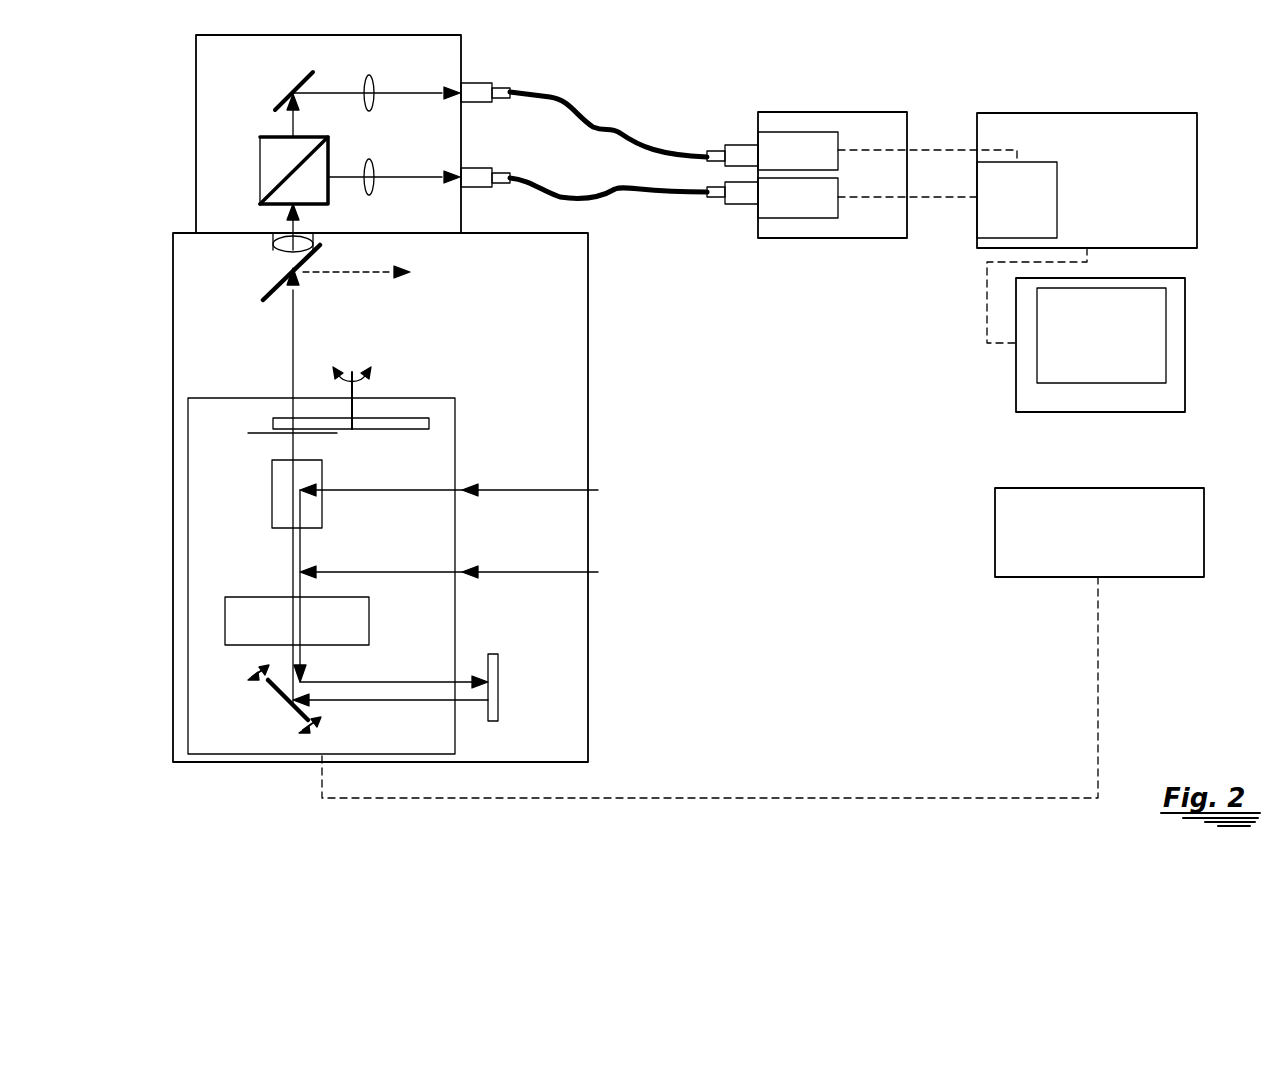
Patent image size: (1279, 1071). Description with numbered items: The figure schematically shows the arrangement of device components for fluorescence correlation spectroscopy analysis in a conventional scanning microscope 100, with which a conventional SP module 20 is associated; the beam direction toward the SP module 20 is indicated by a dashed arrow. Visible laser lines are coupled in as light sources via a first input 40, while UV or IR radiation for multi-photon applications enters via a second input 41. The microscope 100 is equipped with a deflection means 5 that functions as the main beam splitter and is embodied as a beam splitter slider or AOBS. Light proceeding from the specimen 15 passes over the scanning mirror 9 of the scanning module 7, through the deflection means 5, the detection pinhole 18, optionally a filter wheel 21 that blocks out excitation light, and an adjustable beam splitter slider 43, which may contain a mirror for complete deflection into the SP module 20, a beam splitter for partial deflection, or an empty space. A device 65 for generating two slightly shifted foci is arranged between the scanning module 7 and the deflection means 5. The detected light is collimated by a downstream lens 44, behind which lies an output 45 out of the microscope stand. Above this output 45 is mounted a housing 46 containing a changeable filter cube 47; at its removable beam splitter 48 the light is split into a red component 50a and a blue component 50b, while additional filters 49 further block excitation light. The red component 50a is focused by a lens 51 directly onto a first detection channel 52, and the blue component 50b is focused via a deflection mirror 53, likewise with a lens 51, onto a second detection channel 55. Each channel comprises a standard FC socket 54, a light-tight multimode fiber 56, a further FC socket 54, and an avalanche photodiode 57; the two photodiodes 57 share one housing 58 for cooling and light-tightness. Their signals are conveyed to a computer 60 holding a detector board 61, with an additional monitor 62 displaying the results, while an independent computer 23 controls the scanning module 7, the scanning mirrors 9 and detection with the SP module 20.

The deflection means 5 is at (270, 510).
The scanning module 7 is at (238, 686).
The scanning mirror 9 is at (283, 697).
The specimen 15 is at (500, 673).
The detection pinhole 18 is at (267, 435).
The SP module 20 is at (378, 275).
The filter wheel 21 is at (400, 417).
The computer 23 is at (1110, 549).
The first input 40 is at (567, 490).
The second input 41 is at (567, 572).
The adjustable beam splitter slider 43 is at (270, 290).
The lens 44 is at (313, 240).
The output 45 is at (282, 232).
The housing 46 is at (196, 65).
The filter cube 47 is at (258, 170).
The beam splitter 48 is at (292, 167).
The additional filters 49 is at (330, 153).
The red component 50a is at (442, 173).
The blue component 50b is at (437, 87).
The lens 51 is at (368, 74).
The first detection channel 52 is at (487, 201).
The deflection mirror 53 is at (292, 90).
The FC socket 54 is at (477, 93).
The second detection channel 55 is at (478, 82).
The multimode fiber 56 is at (606, 123).
The avalanche photodiode 57 is at (780, 157).
The housing 58 is at (818, 112).
The computer 60 is at (1053, 113).
The detector board 61 is at (1057, 203).
The monitor 62 is at (1015, 373).
The device for generating two foci 65 is at (225, 610).
The scanning microscope 100 is at (633, 340).